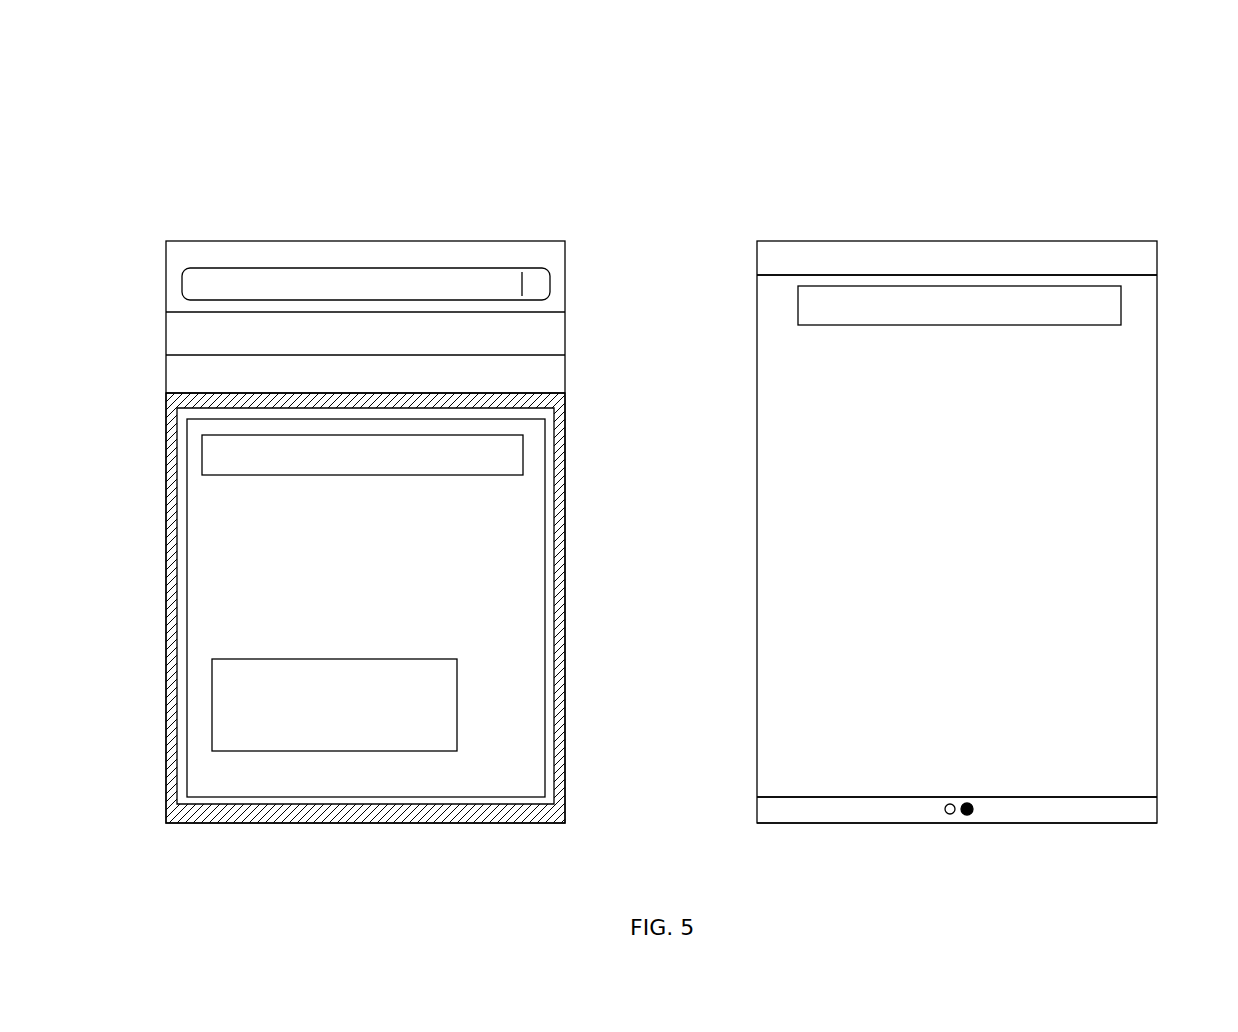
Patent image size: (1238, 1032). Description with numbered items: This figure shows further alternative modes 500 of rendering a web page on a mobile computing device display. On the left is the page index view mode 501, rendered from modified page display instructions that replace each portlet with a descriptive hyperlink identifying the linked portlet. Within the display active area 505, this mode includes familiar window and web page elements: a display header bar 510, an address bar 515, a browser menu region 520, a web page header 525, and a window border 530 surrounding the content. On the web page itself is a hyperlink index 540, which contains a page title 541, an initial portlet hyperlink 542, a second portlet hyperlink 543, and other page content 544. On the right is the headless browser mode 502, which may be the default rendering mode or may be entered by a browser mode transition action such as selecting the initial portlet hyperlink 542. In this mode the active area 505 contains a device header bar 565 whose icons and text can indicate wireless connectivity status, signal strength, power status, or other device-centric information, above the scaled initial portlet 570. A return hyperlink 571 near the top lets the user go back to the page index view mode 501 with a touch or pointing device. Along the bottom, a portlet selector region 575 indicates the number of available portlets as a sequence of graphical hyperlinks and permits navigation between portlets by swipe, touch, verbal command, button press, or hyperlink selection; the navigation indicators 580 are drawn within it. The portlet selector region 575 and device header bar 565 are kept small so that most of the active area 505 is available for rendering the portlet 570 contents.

The alternative modes of rendering a web page 500 is at (980, 96).
The page index view mode 501 is at (246, 168).
The headless browser mode 502 is at (1124, 198).
The display active area 505 is at (292, 241).
The display header bar 510 is at (410, 257).
The address bar 515 is at (507, 258).
The browser menu region 520 is at (348, 343).
The web page header 525 is at (348, 384).
The window border 530 is at (560, 399).
The hyperlink index 540 is at (430, 516).
The page title 541 is at (345, 464).
The initial portlet hyperlink 542 is at (240, 517).
The second portlet hyperlink 543 is at (208, 597).
The other page content 544 is at (252, 701).
The device header bar 565 is at (940, 269).
The scaled initial portlet 570 is at (940, 543).
The return hyperlink 571 is at (940, 317).
The portlet selector region 575 is at (807, 812).
The navigation controls 580 is at (955, 815).